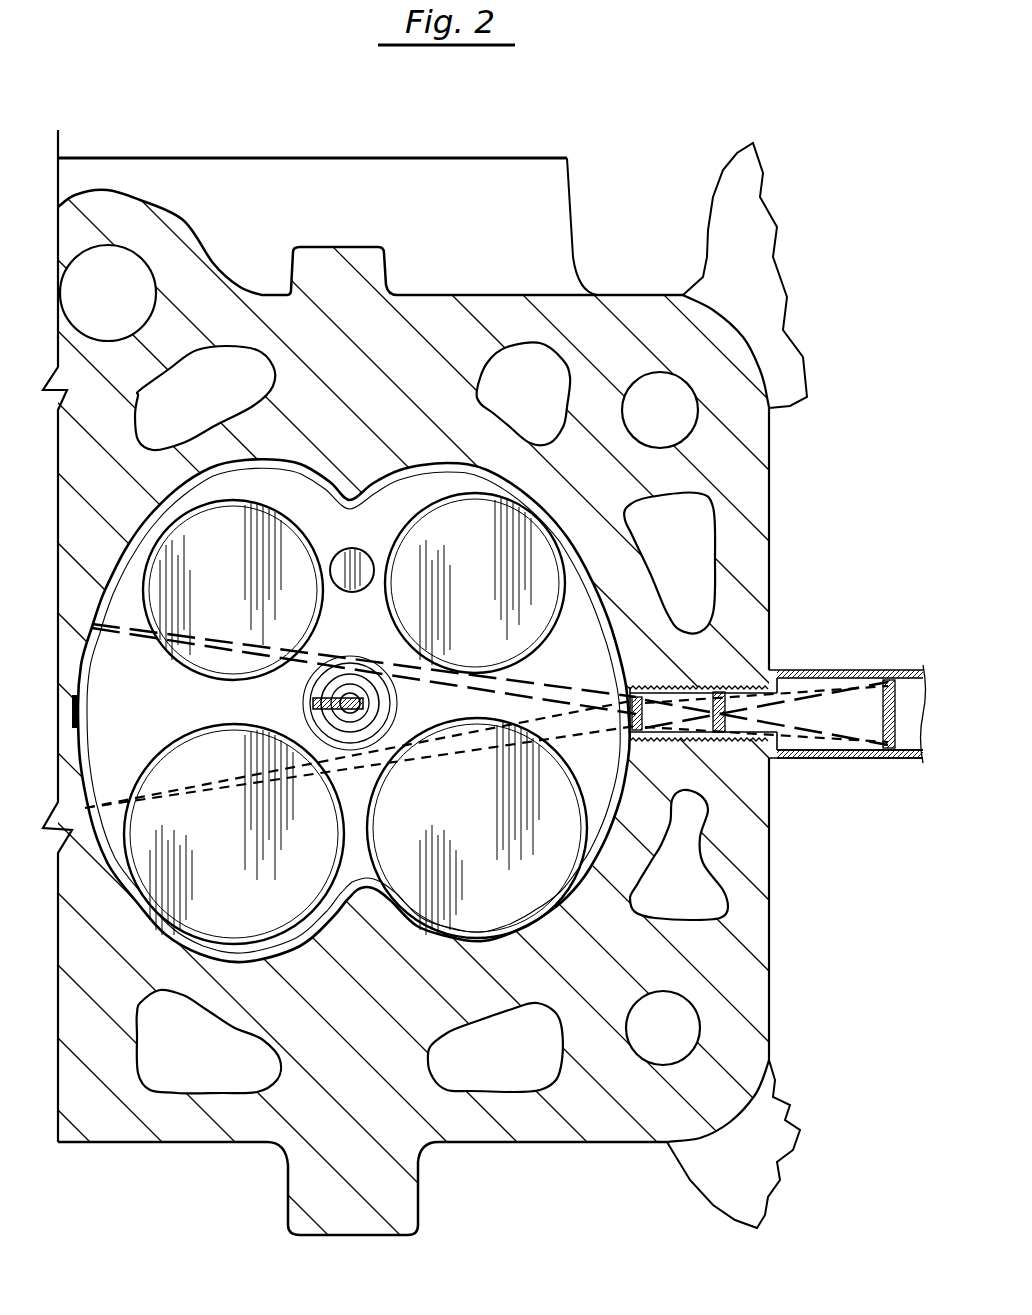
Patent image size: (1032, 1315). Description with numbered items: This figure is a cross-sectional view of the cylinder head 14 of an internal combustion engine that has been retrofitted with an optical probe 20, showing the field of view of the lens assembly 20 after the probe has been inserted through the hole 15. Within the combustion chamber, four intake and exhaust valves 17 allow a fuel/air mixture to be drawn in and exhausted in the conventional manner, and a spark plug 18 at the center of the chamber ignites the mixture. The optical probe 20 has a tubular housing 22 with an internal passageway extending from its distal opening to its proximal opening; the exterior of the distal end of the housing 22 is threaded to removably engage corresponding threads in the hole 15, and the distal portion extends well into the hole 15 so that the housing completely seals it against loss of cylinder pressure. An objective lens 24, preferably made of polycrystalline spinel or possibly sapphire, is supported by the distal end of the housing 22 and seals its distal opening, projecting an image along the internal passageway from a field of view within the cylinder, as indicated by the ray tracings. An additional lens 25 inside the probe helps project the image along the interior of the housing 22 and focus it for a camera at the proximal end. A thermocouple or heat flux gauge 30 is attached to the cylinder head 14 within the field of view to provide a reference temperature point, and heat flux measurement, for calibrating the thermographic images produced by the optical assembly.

The cylinder head 14 is at (195, 713).
The hole 15 is at (731, 686).
The intake and exhaust valves 17 is at (471, 818).
The spark plug 18 is at (310, 686).
The optical probe 20 is at (840, 644).
The housing 22 is at (795, 758).
The objective lens 24 is at (772, 840).
The additional lens 25 is at (880, 740).
The thermocouples or heat flux gauges 30 is at (78, 714).